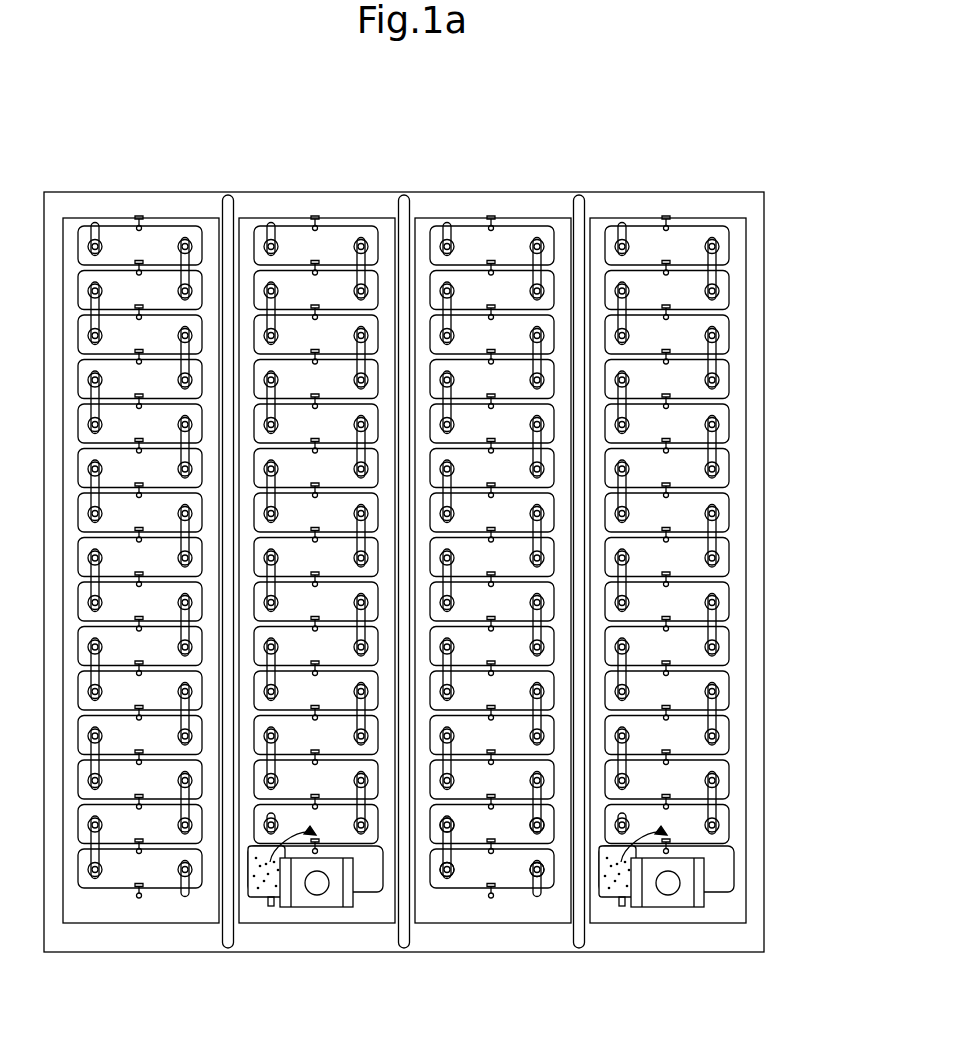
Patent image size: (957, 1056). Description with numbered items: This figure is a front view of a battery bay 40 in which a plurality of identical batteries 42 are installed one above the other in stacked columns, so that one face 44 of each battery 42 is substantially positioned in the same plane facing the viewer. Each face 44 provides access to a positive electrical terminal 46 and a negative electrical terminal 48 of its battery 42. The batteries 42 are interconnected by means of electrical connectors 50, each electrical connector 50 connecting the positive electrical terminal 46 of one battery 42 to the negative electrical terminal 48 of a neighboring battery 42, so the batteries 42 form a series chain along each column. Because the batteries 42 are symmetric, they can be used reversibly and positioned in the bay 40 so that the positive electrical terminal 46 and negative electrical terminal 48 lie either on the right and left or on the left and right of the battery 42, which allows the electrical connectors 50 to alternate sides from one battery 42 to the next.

The bay 40 is at (765, 147).
The battery 42 is at (685, 248).
The face 44 is at (512, 281).
The positive electrical terminal 46 is at (435, 874).
The negative electrical terminal 48 is at (436, 837).
The electrical connector 50 is at (622, 488).